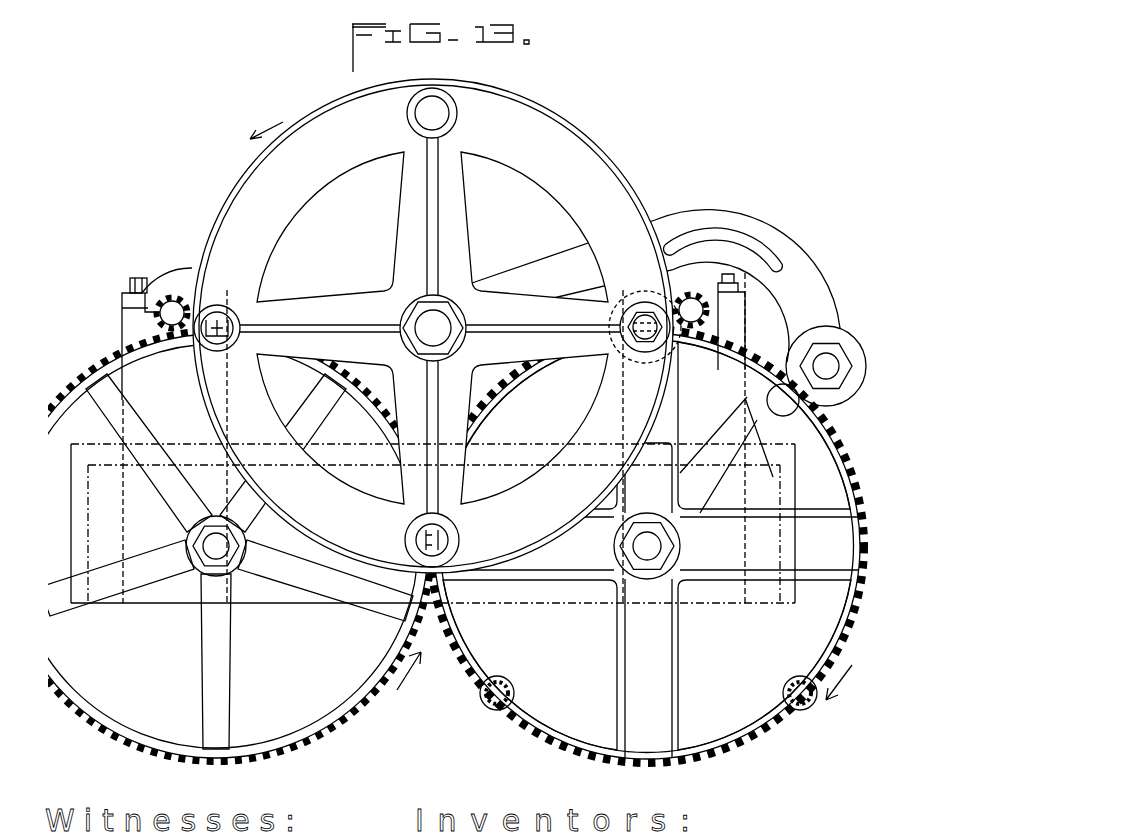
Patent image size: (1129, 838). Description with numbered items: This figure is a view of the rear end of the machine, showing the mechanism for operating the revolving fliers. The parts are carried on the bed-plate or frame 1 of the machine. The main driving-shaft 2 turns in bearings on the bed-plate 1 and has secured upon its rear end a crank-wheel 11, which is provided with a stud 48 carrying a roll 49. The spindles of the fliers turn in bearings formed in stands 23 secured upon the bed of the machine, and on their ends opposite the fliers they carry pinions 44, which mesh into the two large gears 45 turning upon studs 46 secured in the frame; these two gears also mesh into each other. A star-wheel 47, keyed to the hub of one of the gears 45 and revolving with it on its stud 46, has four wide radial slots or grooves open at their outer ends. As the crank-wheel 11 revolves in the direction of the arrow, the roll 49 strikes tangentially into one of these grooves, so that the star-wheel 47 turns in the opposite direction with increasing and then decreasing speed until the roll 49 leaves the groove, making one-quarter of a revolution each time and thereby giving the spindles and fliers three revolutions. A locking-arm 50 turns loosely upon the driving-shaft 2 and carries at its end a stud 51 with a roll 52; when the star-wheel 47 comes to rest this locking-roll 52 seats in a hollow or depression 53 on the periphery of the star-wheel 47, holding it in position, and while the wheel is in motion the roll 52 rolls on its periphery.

The bed-plate 1 is at (366, 464).
The main driving-shaft 2 is at (433, 328).
The crank-wheel 11 is at (520, 142).
The stands 23 is at (421, 334).
The pinions 44 is at (174, 295).
The large gears 45 is at (432, 546).
The studs 46 is at (433, 546).
The star-wheel 47 is at (647, 546).
The stud 48 is at (625, 326).
The roll 49 is at (645, 337).
The locking-arm 50 is at (656, 280).
The stud 51 is at (826, 366).
The locking-roll 52 is at (826, 357).
The depression 53 is at (805, 686).